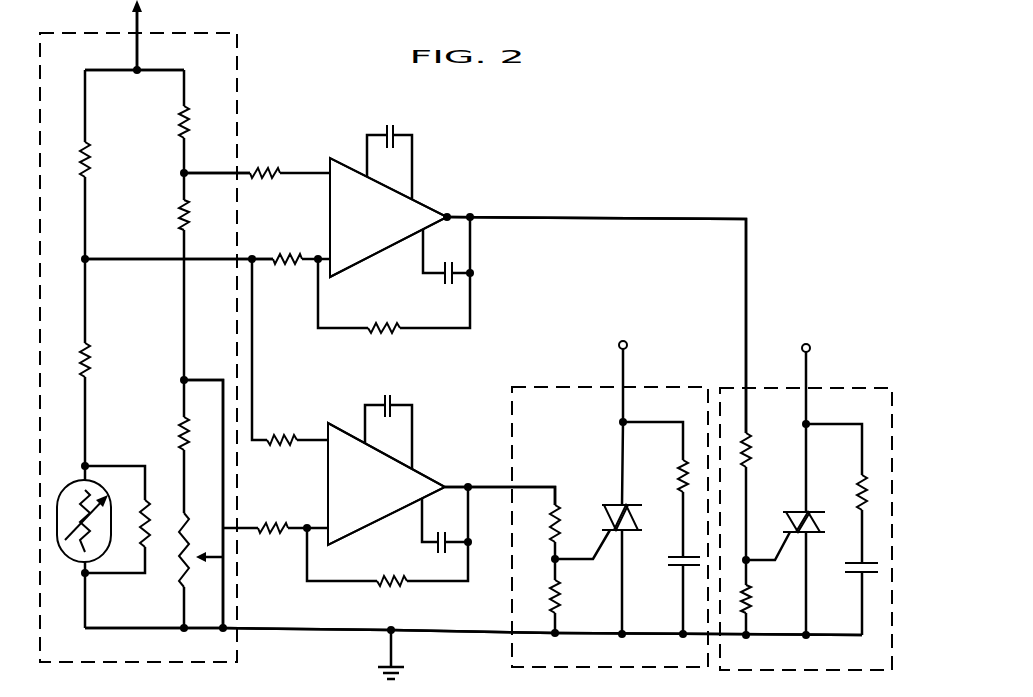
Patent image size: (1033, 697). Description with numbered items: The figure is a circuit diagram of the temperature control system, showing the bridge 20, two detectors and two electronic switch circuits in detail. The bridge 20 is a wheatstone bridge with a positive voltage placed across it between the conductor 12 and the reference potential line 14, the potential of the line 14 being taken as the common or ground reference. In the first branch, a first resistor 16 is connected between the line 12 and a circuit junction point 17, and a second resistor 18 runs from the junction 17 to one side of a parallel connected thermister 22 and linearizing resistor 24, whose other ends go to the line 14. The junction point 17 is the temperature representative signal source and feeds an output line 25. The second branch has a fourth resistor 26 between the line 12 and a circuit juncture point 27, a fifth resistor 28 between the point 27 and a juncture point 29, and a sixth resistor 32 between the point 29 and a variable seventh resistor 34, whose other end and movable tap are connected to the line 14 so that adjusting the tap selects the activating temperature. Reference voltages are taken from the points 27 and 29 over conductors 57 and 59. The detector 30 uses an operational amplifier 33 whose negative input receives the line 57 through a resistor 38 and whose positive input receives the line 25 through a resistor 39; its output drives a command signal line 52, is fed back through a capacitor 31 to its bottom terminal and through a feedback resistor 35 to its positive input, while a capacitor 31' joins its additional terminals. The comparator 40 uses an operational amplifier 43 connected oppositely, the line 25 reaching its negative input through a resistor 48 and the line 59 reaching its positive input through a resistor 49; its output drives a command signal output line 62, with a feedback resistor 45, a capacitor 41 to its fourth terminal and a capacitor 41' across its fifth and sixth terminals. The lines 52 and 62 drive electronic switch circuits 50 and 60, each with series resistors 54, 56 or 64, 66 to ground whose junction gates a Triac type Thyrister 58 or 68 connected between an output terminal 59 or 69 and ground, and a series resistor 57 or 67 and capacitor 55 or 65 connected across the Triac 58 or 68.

The conductor 12 is at (106, 70).
The reference potential line 14 is at (285, 630).
The first resistor 16 is at (80, 160).
The circuit junction point 17 is at (84, 256).
The second resistor 18 is at (78, 362).
The bridge 20 is at (190, 33).
The thermister 22 is at (68, 483).
The linearizing resistor 24 is at (138, 525).
The output line 25 is at (217, 258).
The fourth resistor 26 is at (180, 125).
The circuit juncture point 27 is at (180, 173).
The fifth resistor 28 is at (180, 228).
The circuit juncture point 29 is at (180, 380).
The detector 30 is at (392, 243).
The capacitor 31 is at (448, 267).
The capacitor 31' is at (399, 150).
The sixth resistor 32 is at (180, 436).
The operational amplifier 33 is at (370, 256).
The seventh resistor 34 is at (178, 560).
The feedback resistor 35 is at (392, 333).
The resistor 38 is at (265, 172).
The resistor 39 is at (285, 257).
The comparator 40 is at (385, 502).
The capacitor 41 is at (447, 531).
The capacitor 41' is at (403, 423).
The operational amplifier 43 is at (328, 480).
The feedback resistor 45 is at (390, 584).
The resistor 48 is at (284, 438).
The resistor 49 is at (268, 531).
The electronic switch circuit 50 is at (848, 387).
The command signal line 52 is at (567, 218).
The resistor 54 is at (752, 455).
The capacitor 55 is at (852, 572).
The resistor 56 is at (750, 598).
The conductor / resistor 57 is at (217, 172).
The Thyrister 58 is at (608, 505).
The conductor / output terminal 59 is at (216, 380).
The electronic switch circuit 60 is at (557, 387).
The command signal output line 62 is at (478, 486).
The resistor 64 is at (550, 522).
The capacitor 65 is at (670, 566).
The resistor 66 is at (550, 590).
The resistor 67 is at (678, 470).
The Thyrister 68 is at (800, 512).
The output terminal 69 is at (627, 348).